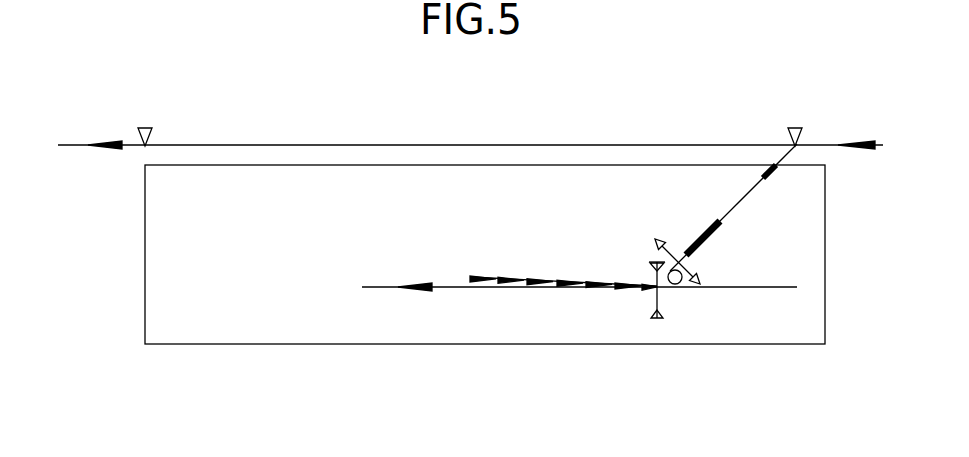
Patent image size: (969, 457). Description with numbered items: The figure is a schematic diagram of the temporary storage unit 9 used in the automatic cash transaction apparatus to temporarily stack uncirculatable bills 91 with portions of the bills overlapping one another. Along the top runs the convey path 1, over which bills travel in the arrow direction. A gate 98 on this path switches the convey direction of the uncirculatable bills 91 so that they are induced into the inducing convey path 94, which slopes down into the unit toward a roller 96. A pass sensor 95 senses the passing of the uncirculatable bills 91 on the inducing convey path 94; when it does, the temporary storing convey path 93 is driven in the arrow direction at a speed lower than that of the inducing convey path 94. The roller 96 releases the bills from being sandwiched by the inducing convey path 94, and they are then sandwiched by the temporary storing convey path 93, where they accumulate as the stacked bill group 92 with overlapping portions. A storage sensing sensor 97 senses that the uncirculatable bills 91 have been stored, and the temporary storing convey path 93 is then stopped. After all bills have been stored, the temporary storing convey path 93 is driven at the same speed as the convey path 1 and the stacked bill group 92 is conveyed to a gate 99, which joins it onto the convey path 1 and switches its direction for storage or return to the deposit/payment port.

The convey path 1 is at (625, 145).
The temporary storage unit 9 is at (380, 345).
The uncirculatable bills 91 is at (713, 232).
The stacked bill group 92 is at (566, 289).
The temporary storing convey path 93 is at (468, 289).
The inducing convey path 94 is at (743, 197).
The pass sensor 95 is at (656, 240).
The roller 96 is at (680, 290).
The storage sensing sensor 97 is at (657, 318).
The gate 98 is at (797, 128).
The gate 99 is at (145, 128).